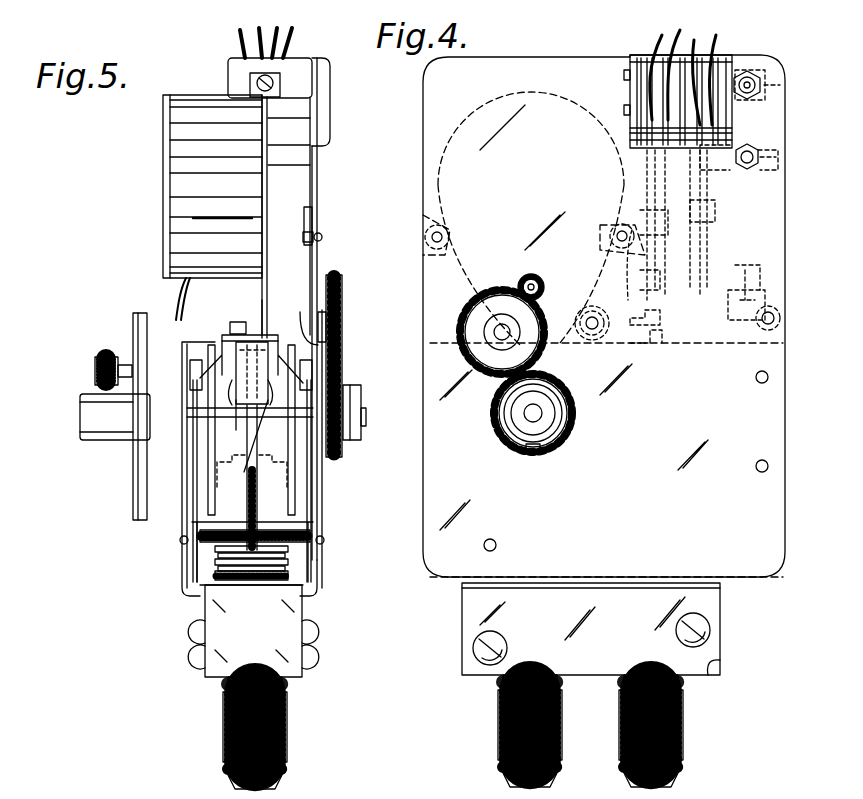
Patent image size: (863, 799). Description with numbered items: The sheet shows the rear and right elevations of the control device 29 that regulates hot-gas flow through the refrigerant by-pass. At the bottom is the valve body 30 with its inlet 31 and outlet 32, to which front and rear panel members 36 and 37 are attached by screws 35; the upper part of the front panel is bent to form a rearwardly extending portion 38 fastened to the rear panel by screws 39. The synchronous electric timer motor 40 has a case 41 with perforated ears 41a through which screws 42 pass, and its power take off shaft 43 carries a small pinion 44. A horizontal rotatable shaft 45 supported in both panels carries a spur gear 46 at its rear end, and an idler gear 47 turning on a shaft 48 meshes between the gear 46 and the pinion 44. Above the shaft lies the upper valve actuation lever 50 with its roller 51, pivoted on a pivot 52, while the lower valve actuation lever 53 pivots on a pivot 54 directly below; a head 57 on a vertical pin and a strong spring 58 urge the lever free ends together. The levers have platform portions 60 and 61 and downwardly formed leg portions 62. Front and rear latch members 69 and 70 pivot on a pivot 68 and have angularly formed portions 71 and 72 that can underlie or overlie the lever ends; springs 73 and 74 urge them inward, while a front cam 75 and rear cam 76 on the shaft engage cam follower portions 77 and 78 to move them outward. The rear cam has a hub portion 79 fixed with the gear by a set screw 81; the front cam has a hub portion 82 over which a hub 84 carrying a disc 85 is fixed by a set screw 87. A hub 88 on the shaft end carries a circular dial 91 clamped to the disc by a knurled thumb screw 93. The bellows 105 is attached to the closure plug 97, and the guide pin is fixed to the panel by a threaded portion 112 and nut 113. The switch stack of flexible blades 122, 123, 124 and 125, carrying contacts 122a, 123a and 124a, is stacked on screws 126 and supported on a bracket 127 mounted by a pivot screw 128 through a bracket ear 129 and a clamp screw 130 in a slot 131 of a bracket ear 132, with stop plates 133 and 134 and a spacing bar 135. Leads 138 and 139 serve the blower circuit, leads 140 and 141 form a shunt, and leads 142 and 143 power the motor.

In FIG. 5, the control device 29 is at (91, 638).
In FIG. 4, the control device 29 is at (447, 695).
In FIG. 5, the valve body 30 is at (253, 631).
In FIG. 4, the valve body 30 is at (726, 661).
In FIG. 5, the inlet 31 is at (255, 733).
In FIG. 4, the inlet 31 is at (520, 790).
In FIG. 4, the outlet 32 is at (640, 790).
In FIG. 5, the screws 35 is at (192, 660).
In FIG. 4, the screws 35 is at (474, 648).
In FIG. 5, the front panel member 36 is at (185, 580).
In FIG. 5, the rear panel member 37 is at (325, 582).
In FIG. 4, the rear panel member 37 is at (562, 68).
In FIG. 5, the rearwardly extending portion 38 is at (203, 342).
In FIG. 4, the rearwardly extending portion 38 is at (702, 345).
In FIG. 5, the screws 39 is at (298, 318).
In FIG. 4, the screws 39 is at (592, 330).
In FIG. 5, the synchronous electric timer motor 40 is at (190, 205).
In FIG. 5, the case 41 is at (275, 188).
In FIG. 4, the case 41 is at (523, 90).
In FIG. 5, the perforated ears 41a is at (312, 215).
In FIG. 4, the perforated ears 41a is at (430, 215).
In FIG. 5, the screws 42 is at (323, 238).
In FIG. 4, the screws 42 is at (432, 237).
In FIG. 5, the power take off shaft 43 is at (343, 280).
In FIG. 4, the power take off shaft 43 is at (541, 278).
In FIG. 5, the pinion 44 is at (345, 293).
In FIG. 4, the pinion 44 is at (542, 284).
In FIG. 5, the rotatable shaft 45 is at (366, 420).
In FIG. 4, the rotatable shaft 45 is at (537, 413).
In FIG. 5, the spur gear 46 is at (362, 408).
In FIG. 4, the spur gear 46 is at (517, 450).
In FIG. 5, the idler gear 47 is at (345, 346).
In FIG. 4, the idler gear 47 is at (465, 350).
In FIG. 4, the shaft 48 is at (500, 332).
In FIG. 5, the upper valve actuation lever 50 is at (312, 318).
In FIG. 5, the roller 51 is at (236, 392).
In FIG. 5, the pivot 52 is at (183, 372).
In FIG. 4, the pivot 52 is at (756, 382).
In FIG. 5, the lower valve actuation lever 53 is at (300, 480).
In FIG. 4, the pivot 54 is at (758, 463).
In FIG. 5, the head 57 is at (247, 568).
In FIG. 5, the spring 58 is at (264, 572).
In FIG. 5, the platform portion 60 is at (240, 334).
In FIG. 5, the platform portion 61 is at (240, 428).
In FIG. 5, the leg portions 62 is at (345, 325).
In FIG. 5, the pivot 68 is at (180, 540).
In FIG. 4, the pivot 68 is at (498, 545).
In FIG. 5, the front latch member 69 is at (200, 504).
In FIG. 5, the rear latch member 70 is at (304, 504).
In FIG. 5, the angularly formed portion 71 is at (252, 373).
In FIG. 5, the angularly formed portion 72 is at (282, 460).
In FIG. 5, the spring 73 is at (212, 556).
In FIG. 5, the spring 74 is at (292, 556).
In FIG. 4, the spring 74 is at (460, 582).
In FIG. 5, the front cam 75 is at (180, 392).
In FIG. 5, the rear cam 76 is at (300, 452).
In FIG. 5, the cam follower portion 77 is at (126, 440).
In FIG. 5, the cam follower portion 78 is at (305, 418).
In FIG. 5, the hub portion 79 is at (343, 380).
In FIG. 4, the hub portion 79 is at (542, 398).
In FIG. 5, the set screw 81 is at (355, 450).
In FIG. 4, the set screw 81 is at (535, 452).
In FIG. 5, the hub portion 82 is at (188, 448).
In FIG. 5, the hub 84 is at (150, 452).
In FIG. 5, the disc 85 is at (148, 350).
In FIG. 5, the set screw 87 is at (190, 462).
In FIG. 5, the hub 88 is at (95, 432).
In FIG. 5, the circular dial 91 is at (138, 318).
In FIG. 5, the thumb screw 93 is at (95, 378).
In FIG. 5, the closure plug 97 is at (256, 582).
In FIG. 5, the bellows 105 is at (213, 586).
In FIG. 5, the threaded portion 112 is at (246, 323).
In FIG. 4, the threaded portion 112 is at (652, 340).
In FIG. 5, the nut 113 is at (266, 330).
In FIG. 4, the nut 113 is at (645, 345).
In FIG. 4, the switch blade 122 is at (732, 172).
In FIG. 4, the contact 122a is at (738, 270).
In FIG. 4, the switch blade 123 is at (680, 148).
In FIG. 4, the contact 123a is at (728, 318).
In FIG. 4, the switch blade 124 is at (660, 146).
In FIG. 4, the contact 124a is at (650, 312).
In FIG. 4, the switch blade 125 is at (640, 148).
In FIG. 5, the screws 126 is at (257, 80).
In FIG. 4, the screws 126 is at (624, 108).
In FIG. 4, the bracket 127 is at (735, 122).
In FIG. 4, the pivot screw 128 is at (752, 76).
In FIG. 4, the bracket ear 129 is at (784, 72).
In FIG. 4, the clamp screw 130 is at (751, 148).
In FIG. 4, the slot 131 is at (770, 175).
In FIG. 4, the bracket ear 132 is at (745, 175).
In FIG. 4, the stop plate 133 is at (648, 180).
In FIG. 4, the stop plate 134 is at (700, 212).
In FIG. 4, the spacing bar 135 is at (633, 265).
In FIG. 5, the lead 138 is at (240, 34).
In FIG. 4, the lead 138 is at (716, 42).
In FIG. 5, the lead 139 is at (263, 30).
In FIG. 4, the lead 139 is at (692, 48).
In FIG. 5, the lead 140 is at (278, 30).
In FIG. 4, the lead 140 is at (676, 38).
In FIG. 5, the lead 141 is at (296, 32).
In FIG. 4, the lead 141 is at (650, 50).
In FIG. 5, the lead 142 is at (178, 296).
In FIG. 5, the lead 143 is at (190, 300).